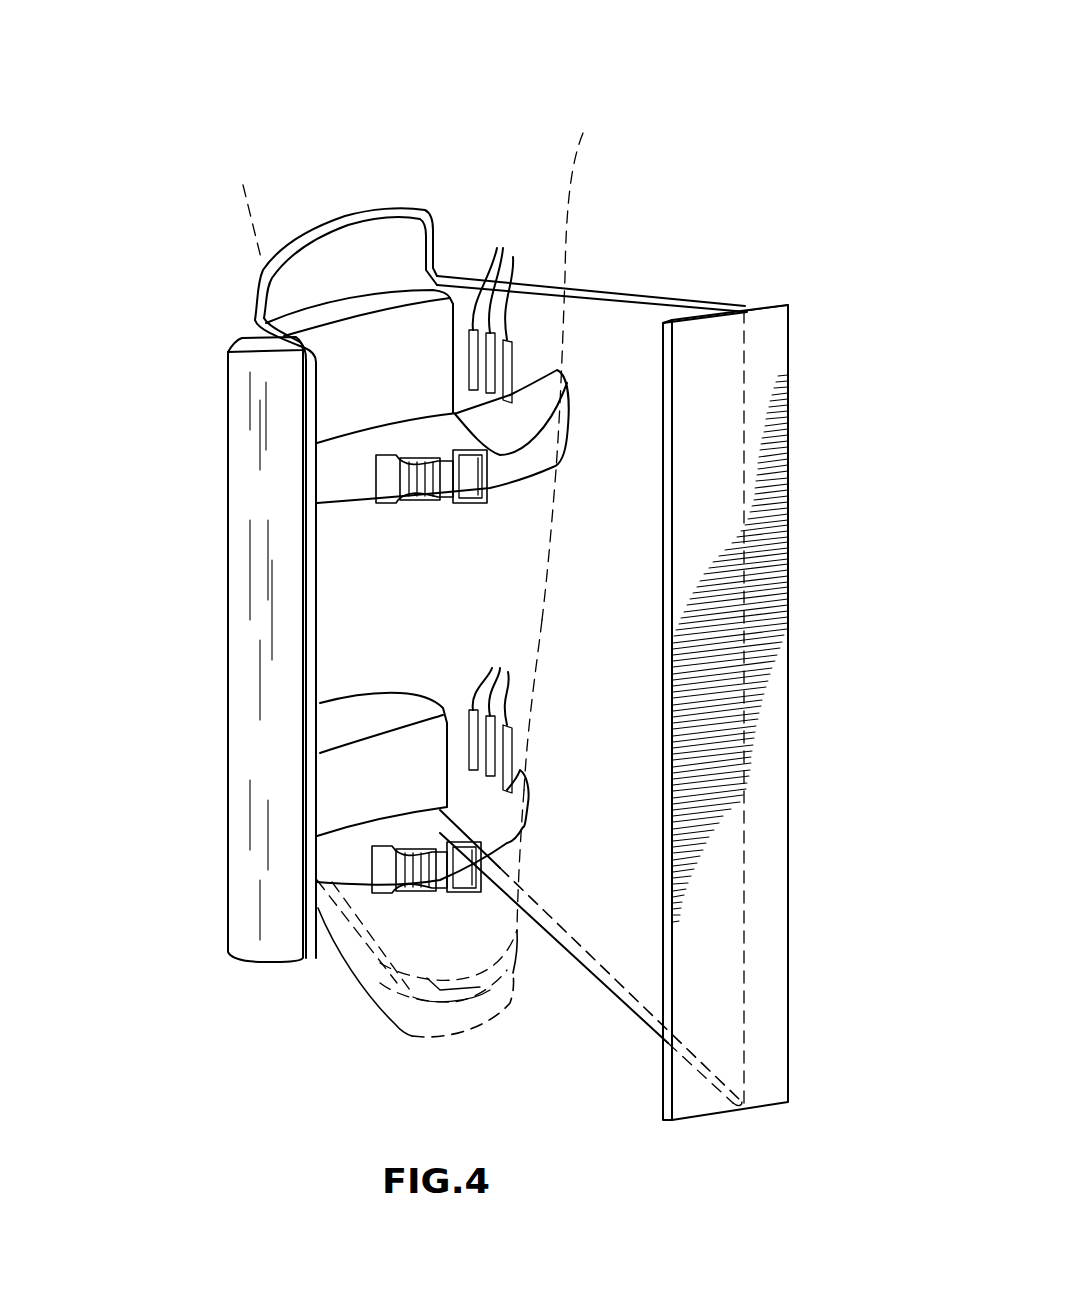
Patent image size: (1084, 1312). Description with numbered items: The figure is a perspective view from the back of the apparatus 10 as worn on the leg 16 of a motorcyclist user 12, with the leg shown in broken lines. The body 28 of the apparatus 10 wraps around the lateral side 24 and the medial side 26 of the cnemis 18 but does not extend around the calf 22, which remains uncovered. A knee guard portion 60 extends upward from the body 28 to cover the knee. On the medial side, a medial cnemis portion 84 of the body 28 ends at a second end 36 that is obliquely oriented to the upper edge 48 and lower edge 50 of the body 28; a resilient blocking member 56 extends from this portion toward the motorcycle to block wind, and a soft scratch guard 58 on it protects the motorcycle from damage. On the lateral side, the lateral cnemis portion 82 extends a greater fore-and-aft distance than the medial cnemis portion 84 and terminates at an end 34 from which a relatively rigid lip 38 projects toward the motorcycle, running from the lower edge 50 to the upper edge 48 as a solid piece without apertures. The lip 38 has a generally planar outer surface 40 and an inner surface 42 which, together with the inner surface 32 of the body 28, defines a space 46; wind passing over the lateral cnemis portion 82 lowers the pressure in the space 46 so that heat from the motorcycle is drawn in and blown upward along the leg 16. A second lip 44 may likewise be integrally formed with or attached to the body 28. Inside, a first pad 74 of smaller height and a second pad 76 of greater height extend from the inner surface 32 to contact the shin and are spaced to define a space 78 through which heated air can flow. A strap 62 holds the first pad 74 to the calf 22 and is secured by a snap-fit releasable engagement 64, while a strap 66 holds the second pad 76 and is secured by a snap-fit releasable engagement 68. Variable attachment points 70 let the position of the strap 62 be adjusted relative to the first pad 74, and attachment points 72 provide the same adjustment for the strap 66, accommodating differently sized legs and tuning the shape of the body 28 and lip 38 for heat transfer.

The apparatus 10 is at (511, 112).
The user 12 is at (580, 153).
The leg 16 is at (252, 222).
The cnemis 18 is at (555, 550).
The calf 22 is at (466, 631).
The lateral side 24 is at (527, 737).
The medial side 26 is at (333, 537).
The body 28 is at (598, 898).
The inner surface 32 is at (586, 710).
The end 34 is at (752, 310).
The second end 36 is at (306, 636).
The lip 38 is at (683, 627).
The outer surface 40 is at (714, 386).
The inner surface 42 is at (660, 420).
The second lip 44 is at (788, 303).
The space 46 is at (606, 828).
The upper edge 48 is at (670, 297).
The lower edge 50 is at (623, 1013).
The blocking member 56 is at (238, 712).
The scratch guard 58 is at (228, 612).
The knee guard portion 60 is at (345, 230).
The strap 62 is at (540, 463).
The snap-fit releasable engagement 64 is at (444, 506).
The strap 66 is at (478, 880).
The snap-fit releasable engagement 68 is at (387, 880).
The variable attachment points 70 is at (500, 262).
The attachment points 72 is at (495, 680).
The first pad 74 is at (410, 290).
The second pad 76 is at (336, 776).
The space 78 is at (378, 597).
The lateral cnemis portion 82 is at (600, 287).
The medial cnemis portion 84 is at (257, 328).